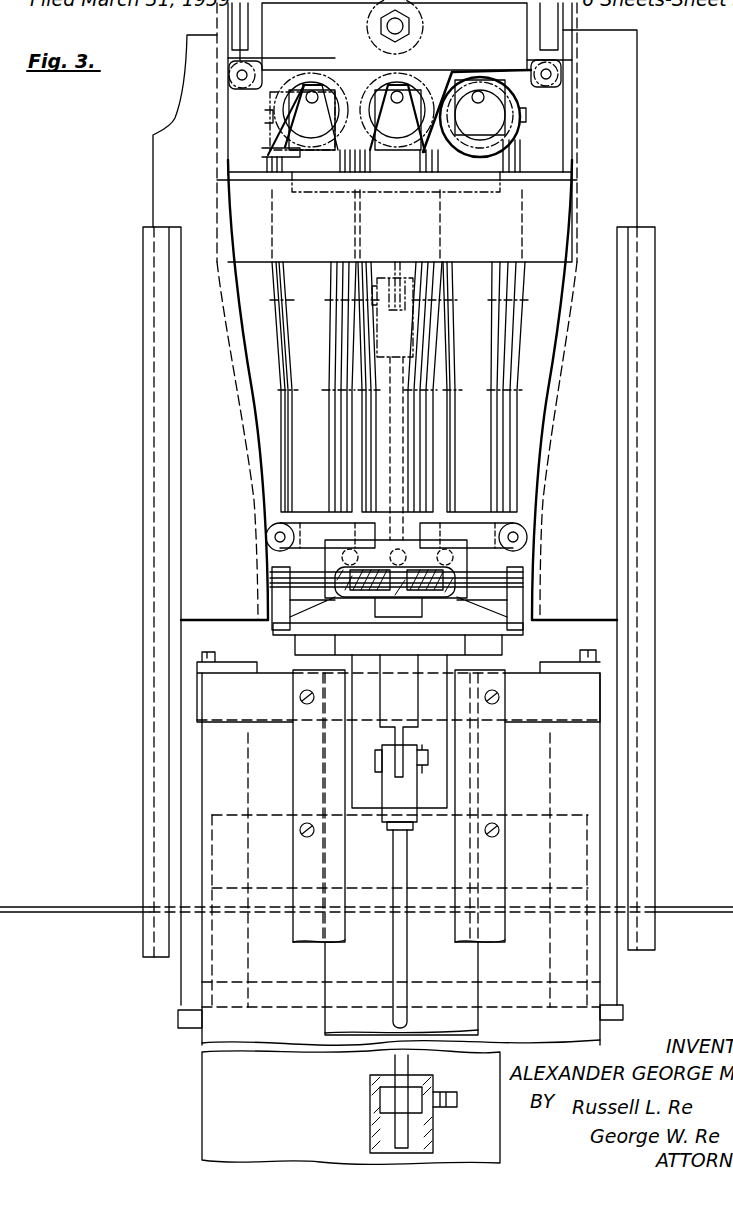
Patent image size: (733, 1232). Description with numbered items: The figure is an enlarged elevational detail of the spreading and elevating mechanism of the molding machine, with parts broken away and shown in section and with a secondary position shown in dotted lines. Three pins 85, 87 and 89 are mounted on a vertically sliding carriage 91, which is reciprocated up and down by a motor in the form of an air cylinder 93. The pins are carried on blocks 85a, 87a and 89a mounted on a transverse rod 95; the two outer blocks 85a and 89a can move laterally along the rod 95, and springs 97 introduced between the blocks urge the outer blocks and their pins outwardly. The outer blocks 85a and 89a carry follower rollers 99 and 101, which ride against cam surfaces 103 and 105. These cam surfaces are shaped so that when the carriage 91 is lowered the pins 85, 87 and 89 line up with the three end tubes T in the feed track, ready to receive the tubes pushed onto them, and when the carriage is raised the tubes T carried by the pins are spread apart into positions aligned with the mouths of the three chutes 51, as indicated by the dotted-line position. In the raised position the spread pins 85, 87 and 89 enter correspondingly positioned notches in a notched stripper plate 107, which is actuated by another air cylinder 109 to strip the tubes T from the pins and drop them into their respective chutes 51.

The chutes 51 is at (550, 382).
The pin 85 is at (322, 562).
The pin 87 is at (413, 553).
The pin 89 is at (476, 562).
The block 85a is at (337, 593).
The block 87a is at (410, 543).
The block 89a is at (457, 592).
The vertically sliding carriage 91 is at (308, 645).
The air cylinder 93 is at (372, 1123).
The transverse rod 95 is at (302, 578).
The springs 97 is at (528, 628).
The follower roller 99 is at (283, 523).
The follower roller 101 is at (508, 520).
The cam surface 103 is at (258, 436).
The cam surface 105 is at (530, 437).
The notched stripper plate 107 is at (307, 50).
The air cylinder 109 is at (423, 26).
The tube T is at (530, 135).